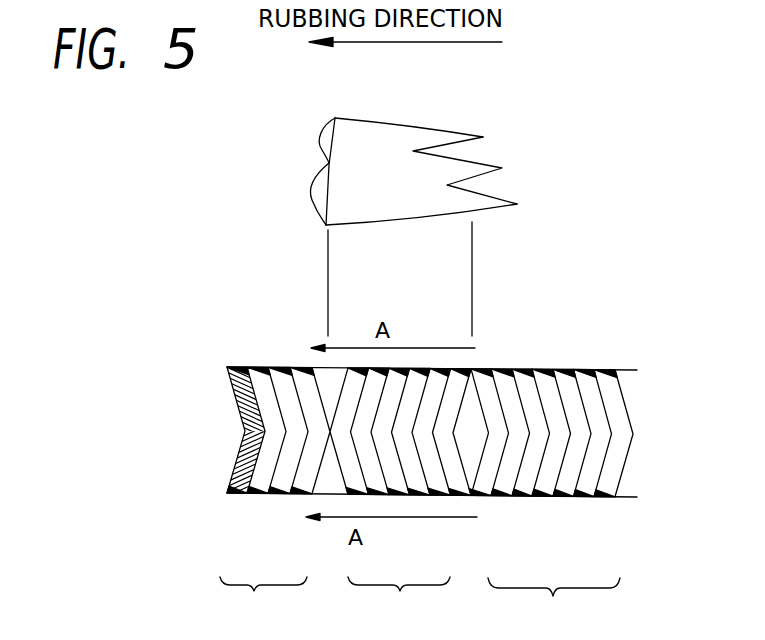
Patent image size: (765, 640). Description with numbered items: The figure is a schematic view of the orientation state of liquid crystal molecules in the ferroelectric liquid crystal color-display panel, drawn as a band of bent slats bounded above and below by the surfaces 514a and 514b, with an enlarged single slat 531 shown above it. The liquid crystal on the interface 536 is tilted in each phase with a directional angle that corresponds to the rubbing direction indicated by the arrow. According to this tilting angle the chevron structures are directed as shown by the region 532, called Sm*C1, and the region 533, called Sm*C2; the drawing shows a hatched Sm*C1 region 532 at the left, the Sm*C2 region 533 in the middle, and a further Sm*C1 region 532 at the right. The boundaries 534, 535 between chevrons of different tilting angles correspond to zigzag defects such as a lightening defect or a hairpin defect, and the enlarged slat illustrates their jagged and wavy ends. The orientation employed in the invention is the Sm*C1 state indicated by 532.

The upper surface of alignment film 514a is at (627, 370).
The lower surface of alignment film 514b is at (622, 498).
The polymer chain slat 531 is at (617, 418).
The chevron structure Sm*C1 532 is at (420, 499).
The chevron structure Sm*C2 533 is at (399, 499).
The boundary of chevrons 534 is at (469, 127).
The boundary of chevrons 535 is at (310, 138).
The liquid crystal on the interface 536 is at (553, 497).